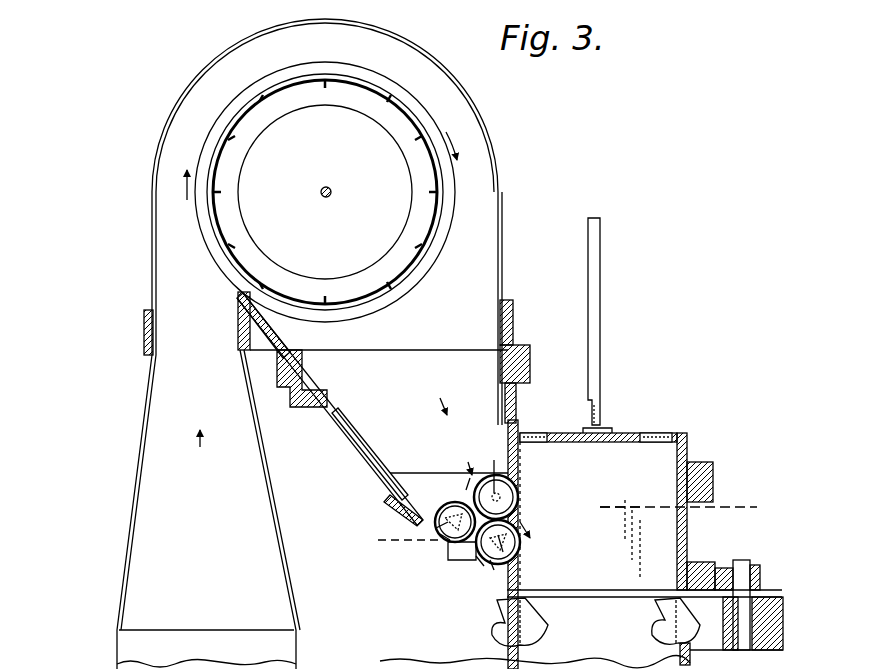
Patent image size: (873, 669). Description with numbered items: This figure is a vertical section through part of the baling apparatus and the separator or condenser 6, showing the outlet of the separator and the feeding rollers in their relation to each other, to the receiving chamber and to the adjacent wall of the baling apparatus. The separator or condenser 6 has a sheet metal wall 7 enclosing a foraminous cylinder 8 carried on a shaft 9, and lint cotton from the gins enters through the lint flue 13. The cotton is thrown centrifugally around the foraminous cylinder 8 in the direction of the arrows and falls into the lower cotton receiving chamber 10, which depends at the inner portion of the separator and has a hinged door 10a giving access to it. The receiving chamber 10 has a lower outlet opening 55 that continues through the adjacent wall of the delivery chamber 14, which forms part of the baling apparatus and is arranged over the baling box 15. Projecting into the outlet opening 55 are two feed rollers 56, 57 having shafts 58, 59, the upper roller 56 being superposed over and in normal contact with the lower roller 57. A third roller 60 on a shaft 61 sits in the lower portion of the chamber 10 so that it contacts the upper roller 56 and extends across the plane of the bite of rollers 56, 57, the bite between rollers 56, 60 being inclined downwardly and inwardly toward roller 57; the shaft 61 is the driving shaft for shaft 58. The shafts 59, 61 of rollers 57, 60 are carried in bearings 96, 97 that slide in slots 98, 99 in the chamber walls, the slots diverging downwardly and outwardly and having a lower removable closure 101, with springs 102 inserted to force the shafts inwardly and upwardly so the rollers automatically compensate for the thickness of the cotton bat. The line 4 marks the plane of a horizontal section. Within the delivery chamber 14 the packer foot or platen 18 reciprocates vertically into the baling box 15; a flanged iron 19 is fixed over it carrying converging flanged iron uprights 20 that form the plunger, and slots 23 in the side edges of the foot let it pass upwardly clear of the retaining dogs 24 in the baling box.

The section line 4— 4 is at (567, 525).
The separator or condenser 6 is at (150, 185).
The sheet metal wall 7 is at (503, 242).
The foraminous cylinder 8 is at (216, 240).
The shaft 9 is at (340, 192).
The cotton receiving chamber 10 is at (385, 445).
The hinged door 10a is at (347, 442).
The lint flue 13 is at (208, 509).
The delivery chamber 14 is at (620, 495).
The baling box 15 is at (581, 629).
The packer foot or platen 18 is at (645, 434).
The flanged iron 19 is at (606, 413).
The flanged iron uprights 20 is at (600, 343).
The slots 23 is at (535, 433).
The retaining dogs 24 is at (538, 615).
The lower outlet opening 55 is at (522, 506).
The feed roller 56 is at (520, 498).
The feed roller 57 is at (522, 545).
The shaft 58 is at (490, 467).
The shaft 59 is at (505, 552).
The third roller 60 is at (452, 510).
The shaft 61 is at (460, 545).
The bearings 96 is at (480, 565).
The bearings 97 is at (445, 528).
The slots 98 is at (493, 565).
The slots 99 is at (448, 536).
The removable closure 101 is at (396, 520).
The springs 102 is at (440, 613).